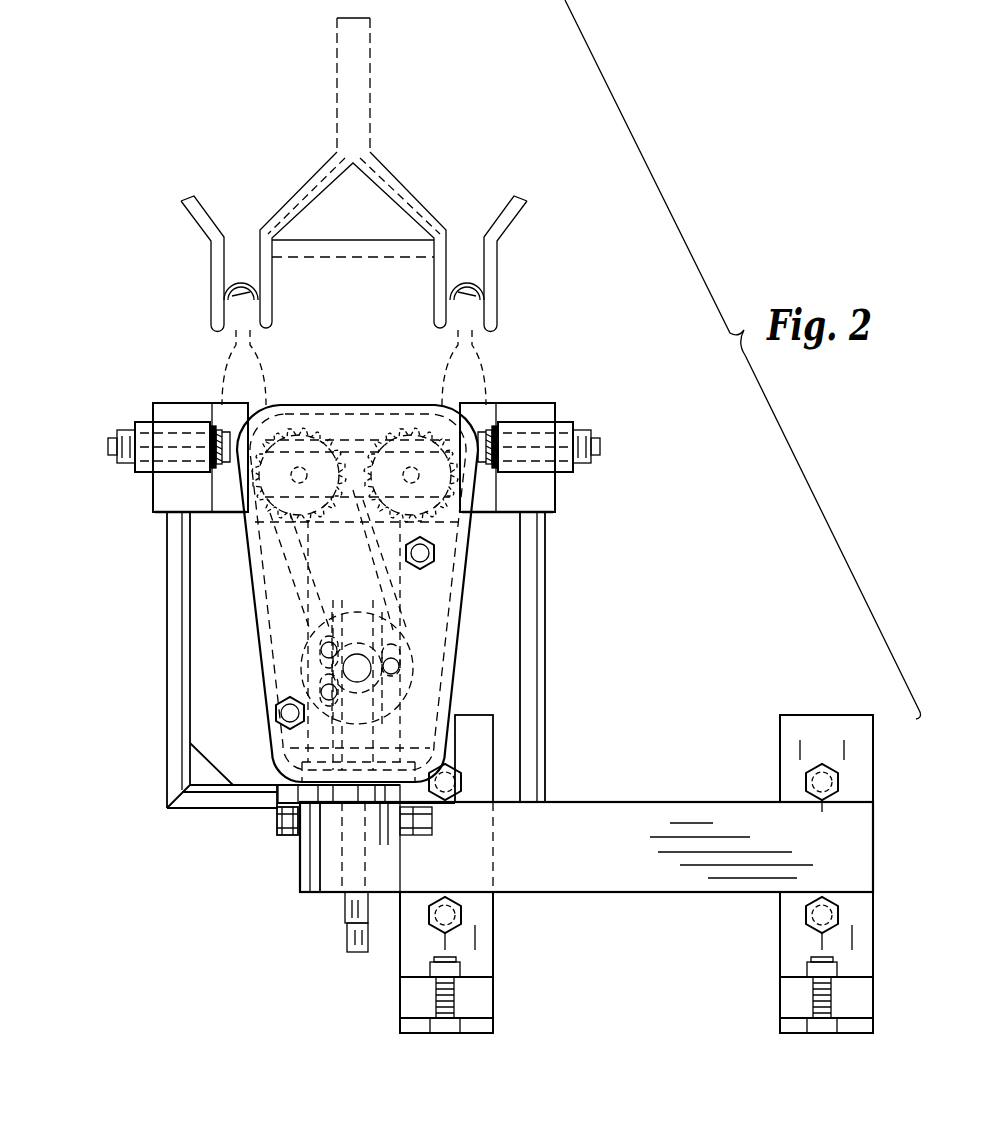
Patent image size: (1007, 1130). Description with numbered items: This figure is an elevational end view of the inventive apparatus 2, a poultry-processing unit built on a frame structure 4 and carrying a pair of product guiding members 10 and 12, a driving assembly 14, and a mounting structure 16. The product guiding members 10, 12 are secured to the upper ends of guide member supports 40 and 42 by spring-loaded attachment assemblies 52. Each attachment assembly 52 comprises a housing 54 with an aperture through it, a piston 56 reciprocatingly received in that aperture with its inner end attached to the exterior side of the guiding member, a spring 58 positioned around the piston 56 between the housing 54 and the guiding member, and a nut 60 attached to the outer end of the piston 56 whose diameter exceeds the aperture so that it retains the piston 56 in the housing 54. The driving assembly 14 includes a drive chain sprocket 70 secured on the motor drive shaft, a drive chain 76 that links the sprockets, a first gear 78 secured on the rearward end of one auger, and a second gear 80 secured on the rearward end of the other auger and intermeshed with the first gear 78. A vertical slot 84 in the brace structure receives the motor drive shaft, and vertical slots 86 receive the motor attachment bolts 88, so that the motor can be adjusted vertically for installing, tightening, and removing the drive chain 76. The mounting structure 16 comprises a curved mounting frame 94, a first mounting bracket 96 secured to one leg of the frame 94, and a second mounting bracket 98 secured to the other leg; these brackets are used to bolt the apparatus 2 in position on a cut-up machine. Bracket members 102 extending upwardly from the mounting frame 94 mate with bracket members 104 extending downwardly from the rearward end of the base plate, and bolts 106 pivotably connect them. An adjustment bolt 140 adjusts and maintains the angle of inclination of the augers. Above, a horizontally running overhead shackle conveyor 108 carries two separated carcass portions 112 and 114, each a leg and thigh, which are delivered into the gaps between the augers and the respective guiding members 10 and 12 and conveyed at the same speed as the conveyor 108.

The inventive apparatus 2 is at (570, 570).
The frame structure 4 is at (185, 815).
The product guiding member 10 is at (556, 403).
The product guiding member 12 is at (168, 400).
The driving assembly 14 is at (222, 645).
The mounting structure 16 is at (622, 882).
The guide member support 40 is at (546, 600).
The guide member support 42 is at (176, 705).
The spring-loaded attachment assembly 52 is at (140, 422).
The housing 54 is at (168, 487).
The piston 56 is at (108, 447).
The spring 58 is at (216, 427).
The nut 60 is at (135, 472).
The drive chain sprocket 70 is at (500, 746).
The drive chain 76 is at (290, 596).
The first gear 78 is at (318, 402).
The second gear 80 is at (395, 405).
The vertical slot 84 is at (410, 620).
The vertical slots 86 is at (300, 690).
The motor attachment bolts 88 is at (352, 610).
The curved mounting frame 94 is at (718, 830).
The first mounting bracket 96 is at (830, 735).
The second mounting bracket 98 is at (470, 956).
The bracket members 102 is at (406, 795).
The bracket members 104 is at (380, 803).
The bolts 106 is at (500, 800).
The overhead shackle conveyor 108 is at (350, 78).
The carcass portion 112 is at (490, 330).
The carcass portion 114 is at (243, 291).
The adjustment bolt 140 is at (352, 953).